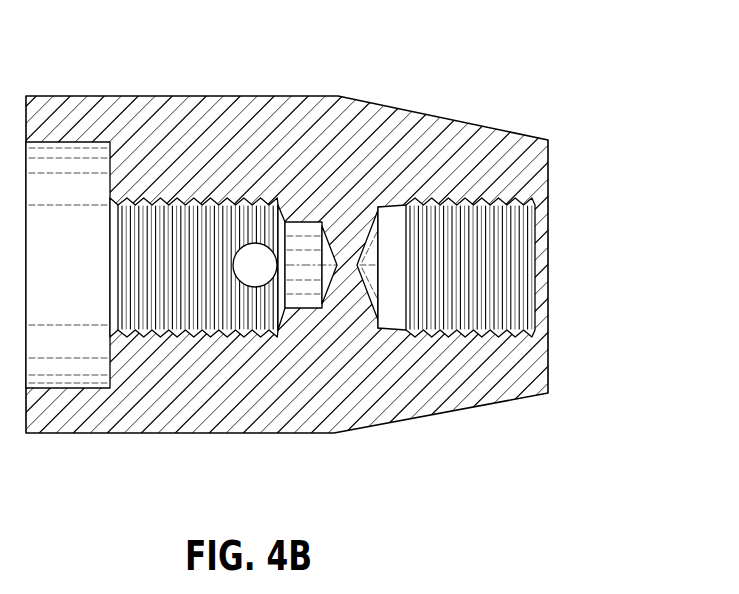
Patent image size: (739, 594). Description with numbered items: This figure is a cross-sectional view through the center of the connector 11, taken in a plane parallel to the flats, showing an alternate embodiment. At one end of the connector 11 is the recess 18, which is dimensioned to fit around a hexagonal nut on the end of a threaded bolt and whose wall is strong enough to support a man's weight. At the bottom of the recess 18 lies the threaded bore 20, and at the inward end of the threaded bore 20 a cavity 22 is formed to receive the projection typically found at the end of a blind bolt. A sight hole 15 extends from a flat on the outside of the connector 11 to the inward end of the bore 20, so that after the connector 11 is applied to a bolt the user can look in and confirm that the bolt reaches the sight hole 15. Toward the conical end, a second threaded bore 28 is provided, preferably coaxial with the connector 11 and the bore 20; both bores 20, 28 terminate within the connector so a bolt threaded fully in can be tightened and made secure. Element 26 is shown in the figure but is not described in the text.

The connector 11 is at (369, 252).
The sight hole 15 is at (253, 258).
The recess 18 is at (98, 96).
The threaded bore 20 is at (141, 336).
The cavity 22 is at (316, 222).
The conical seat 26 is at (357, 262).
The threaded bore 28 is at (484, 334).